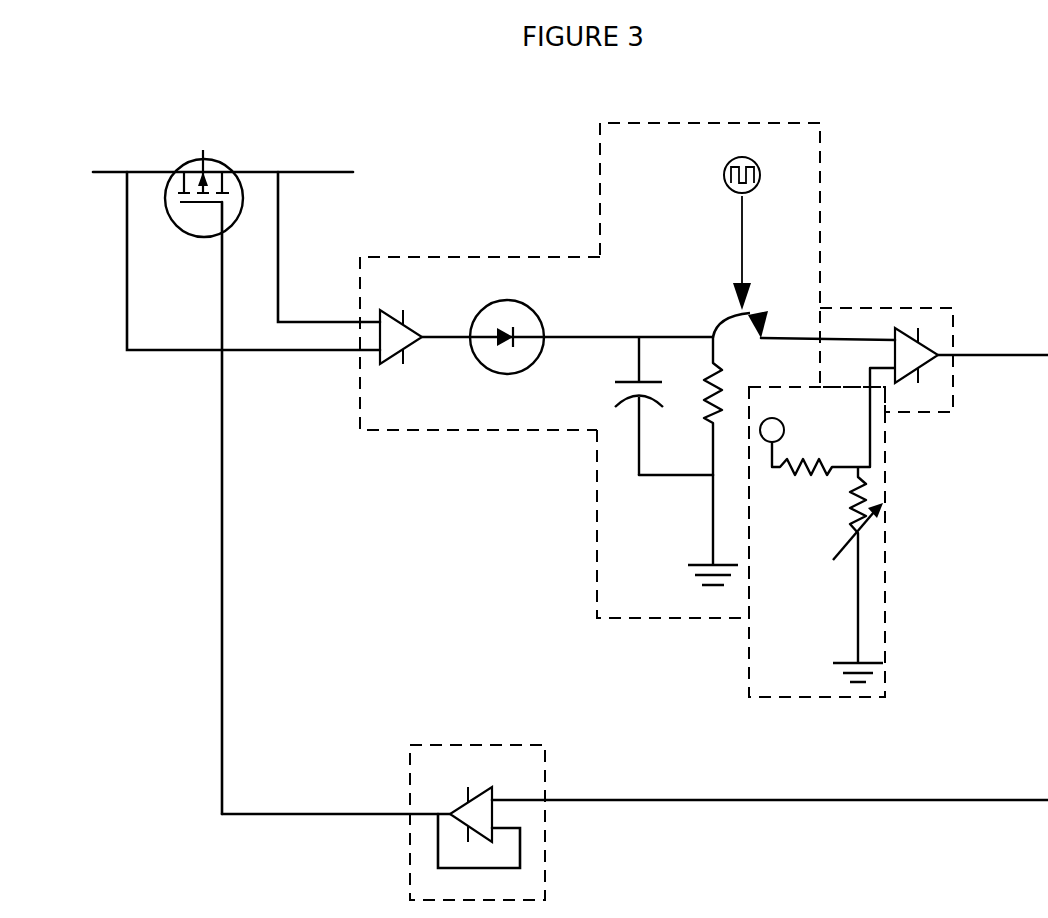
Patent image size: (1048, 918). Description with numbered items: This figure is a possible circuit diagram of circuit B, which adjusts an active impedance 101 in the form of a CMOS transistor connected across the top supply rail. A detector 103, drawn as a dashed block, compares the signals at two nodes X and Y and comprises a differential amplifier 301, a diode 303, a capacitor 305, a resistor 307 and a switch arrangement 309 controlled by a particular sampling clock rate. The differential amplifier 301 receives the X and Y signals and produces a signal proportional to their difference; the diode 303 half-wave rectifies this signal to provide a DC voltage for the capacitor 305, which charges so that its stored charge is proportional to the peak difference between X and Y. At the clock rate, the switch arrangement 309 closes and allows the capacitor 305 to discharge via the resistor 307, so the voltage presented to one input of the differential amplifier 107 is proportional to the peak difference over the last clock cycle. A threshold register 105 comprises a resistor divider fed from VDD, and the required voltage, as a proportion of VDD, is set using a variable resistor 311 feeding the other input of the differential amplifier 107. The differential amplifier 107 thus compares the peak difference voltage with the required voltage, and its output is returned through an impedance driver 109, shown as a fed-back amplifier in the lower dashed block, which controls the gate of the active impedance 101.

The active impedance 101 is at (180, 146).
The detector 103 is at (497, 431).
The threshold register 105 is at (842, 532).
The differential amplifier 107 is at (957, 334).
The impedance driver 109 is at (543, 861).
The differential amplifier 301 is at (382, 362).
The diode 303 is at (510, 381).
The capacitor 305 is at (613, 392).
The resistor 307 is at (697, 414).
The switch arrangement 309 is at (747, 231).
The variable resistor 311 is at (843, 521).